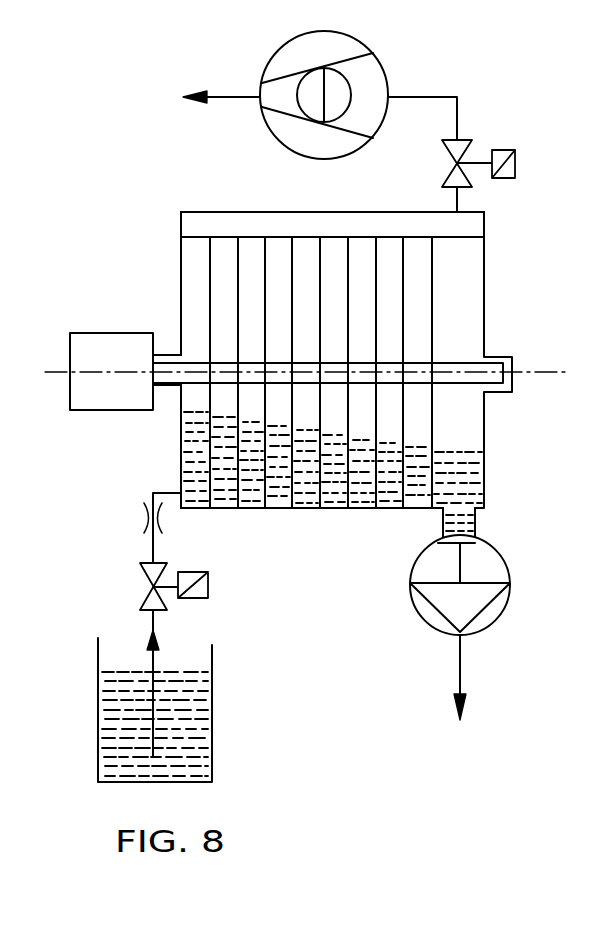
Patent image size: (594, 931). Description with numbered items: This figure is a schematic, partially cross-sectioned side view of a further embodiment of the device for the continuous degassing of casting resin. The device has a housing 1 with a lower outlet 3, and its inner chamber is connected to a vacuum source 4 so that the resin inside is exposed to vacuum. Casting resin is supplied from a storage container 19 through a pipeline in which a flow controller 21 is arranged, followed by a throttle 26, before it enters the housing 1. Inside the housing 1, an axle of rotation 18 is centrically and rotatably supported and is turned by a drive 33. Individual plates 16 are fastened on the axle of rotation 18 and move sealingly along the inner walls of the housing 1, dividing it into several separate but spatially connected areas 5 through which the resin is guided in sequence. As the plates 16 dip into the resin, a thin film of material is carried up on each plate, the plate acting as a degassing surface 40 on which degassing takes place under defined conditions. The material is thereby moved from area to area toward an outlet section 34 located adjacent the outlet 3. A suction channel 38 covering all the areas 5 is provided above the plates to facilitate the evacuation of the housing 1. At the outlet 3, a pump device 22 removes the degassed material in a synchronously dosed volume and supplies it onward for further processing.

The housing 1 is at (350, 508).
The outlet 3 is at (475, 522).
The vacuum source 4 is at (383, 65).
The areas 5 is at (303, 508).
The plates 16 is at (195, 267).
The axle of rotation 18 is at (460, 370).
The storage container 19 is at (212, 737).
The flow controller 21 is at (140, 572).
The pump device 22 is at (507, 607).
The throttle 26 is at (143, 515).
The drive 33 is at (125, 335).
The outlet section 34 is at (473, 473).
The suction channel 38 is at (213, 220).
The degassing surface 40 is at (424, 291).